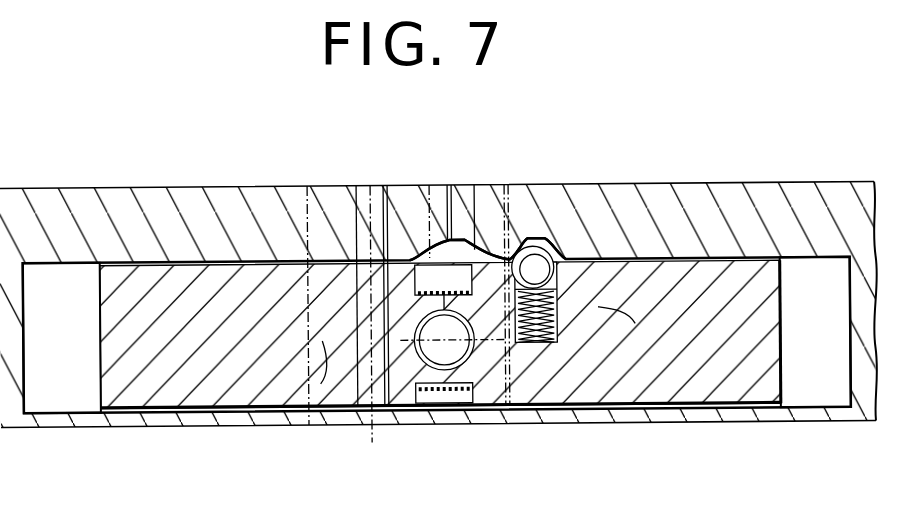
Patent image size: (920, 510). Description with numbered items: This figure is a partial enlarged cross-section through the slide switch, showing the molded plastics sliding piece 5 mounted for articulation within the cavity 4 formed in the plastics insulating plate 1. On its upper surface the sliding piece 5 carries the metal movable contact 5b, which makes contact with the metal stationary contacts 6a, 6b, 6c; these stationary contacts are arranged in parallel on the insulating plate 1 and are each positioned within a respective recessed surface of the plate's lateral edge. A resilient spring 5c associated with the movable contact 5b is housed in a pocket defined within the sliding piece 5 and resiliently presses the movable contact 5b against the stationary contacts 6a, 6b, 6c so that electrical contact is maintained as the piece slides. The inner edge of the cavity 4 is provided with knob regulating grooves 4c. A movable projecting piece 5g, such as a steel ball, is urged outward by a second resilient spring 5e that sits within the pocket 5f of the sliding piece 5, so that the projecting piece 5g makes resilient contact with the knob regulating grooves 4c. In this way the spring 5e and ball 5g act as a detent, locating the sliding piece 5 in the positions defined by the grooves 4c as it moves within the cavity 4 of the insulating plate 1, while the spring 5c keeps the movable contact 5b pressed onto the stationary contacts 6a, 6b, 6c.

The insulating plate 1 is at (108, 193).
The cavity 4 is at (63, 406).
The knob regulating grooves 4c is at (470, 238).
The sliding piece 5 is at (762, 331).
The movable contact 5b is at (463, 288).
The resilient spring 5c is at (456, 372).
The resilient spring 5e is at (566, 345).
The pocket 5f is at (635, 325).
The movable projecting piece 5g is at (573, 258).
The stationary contact 6a is at (333, 195).
The stationary contact 6b is at (393, 195).
The stationary contact 6c is at (458, 200).